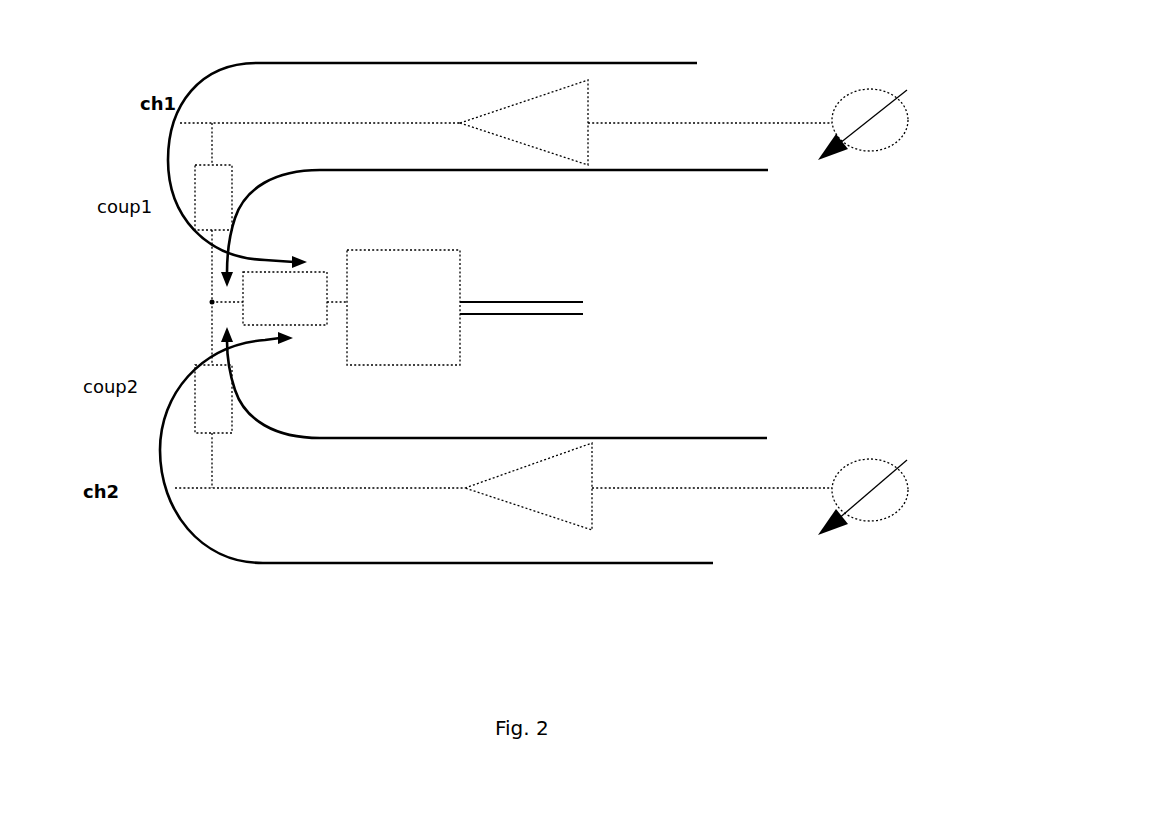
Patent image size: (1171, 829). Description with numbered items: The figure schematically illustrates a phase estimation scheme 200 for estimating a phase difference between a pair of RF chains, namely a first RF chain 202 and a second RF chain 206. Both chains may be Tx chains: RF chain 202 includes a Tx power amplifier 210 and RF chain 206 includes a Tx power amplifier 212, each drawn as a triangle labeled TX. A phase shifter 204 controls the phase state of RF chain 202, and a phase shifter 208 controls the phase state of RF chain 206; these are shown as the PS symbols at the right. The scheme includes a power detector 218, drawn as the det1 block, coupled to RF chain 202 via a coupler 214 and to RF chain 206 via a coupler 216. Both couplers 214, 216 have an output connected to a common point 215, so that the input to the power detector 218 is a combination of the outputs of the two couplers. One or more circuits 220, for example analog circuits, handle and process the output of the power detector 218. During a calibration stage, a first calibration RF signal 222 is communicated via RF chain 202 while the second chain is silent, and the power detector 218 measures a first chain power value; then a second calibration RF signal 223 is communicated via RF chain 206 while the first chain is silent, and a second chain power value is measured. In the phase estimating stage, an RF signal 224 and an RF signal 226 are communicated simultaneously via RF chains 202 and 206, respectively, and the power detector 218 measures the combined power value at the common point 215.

The phase estimation scheme 200 is at (1073, 510).
The first RF chain 202 is at (723, 123).
The phase shifter 204 is at (903, 108).
The second RF chain 206 is at (677, 488).
The phase shifter 208 is at (868, 458).
The Tx power amplifier 210 is at (590, 102).
The Tx power amplifier 212 is at (560, 520).
The coupler 214 is at (192, 235).
The common point 215 is at (207, 305).
The coupler 216 is at (195, 412).
The power detector 218 is at (307, 327).
The circuits 220 is at (382, 252).
The first calibration RF signal 222 is at (463, 62).
The second calibration RF signal 223 is at (478, 565).
The RF signal 224 is at (650, 172).
The RF signal 226 is at (687, 438).